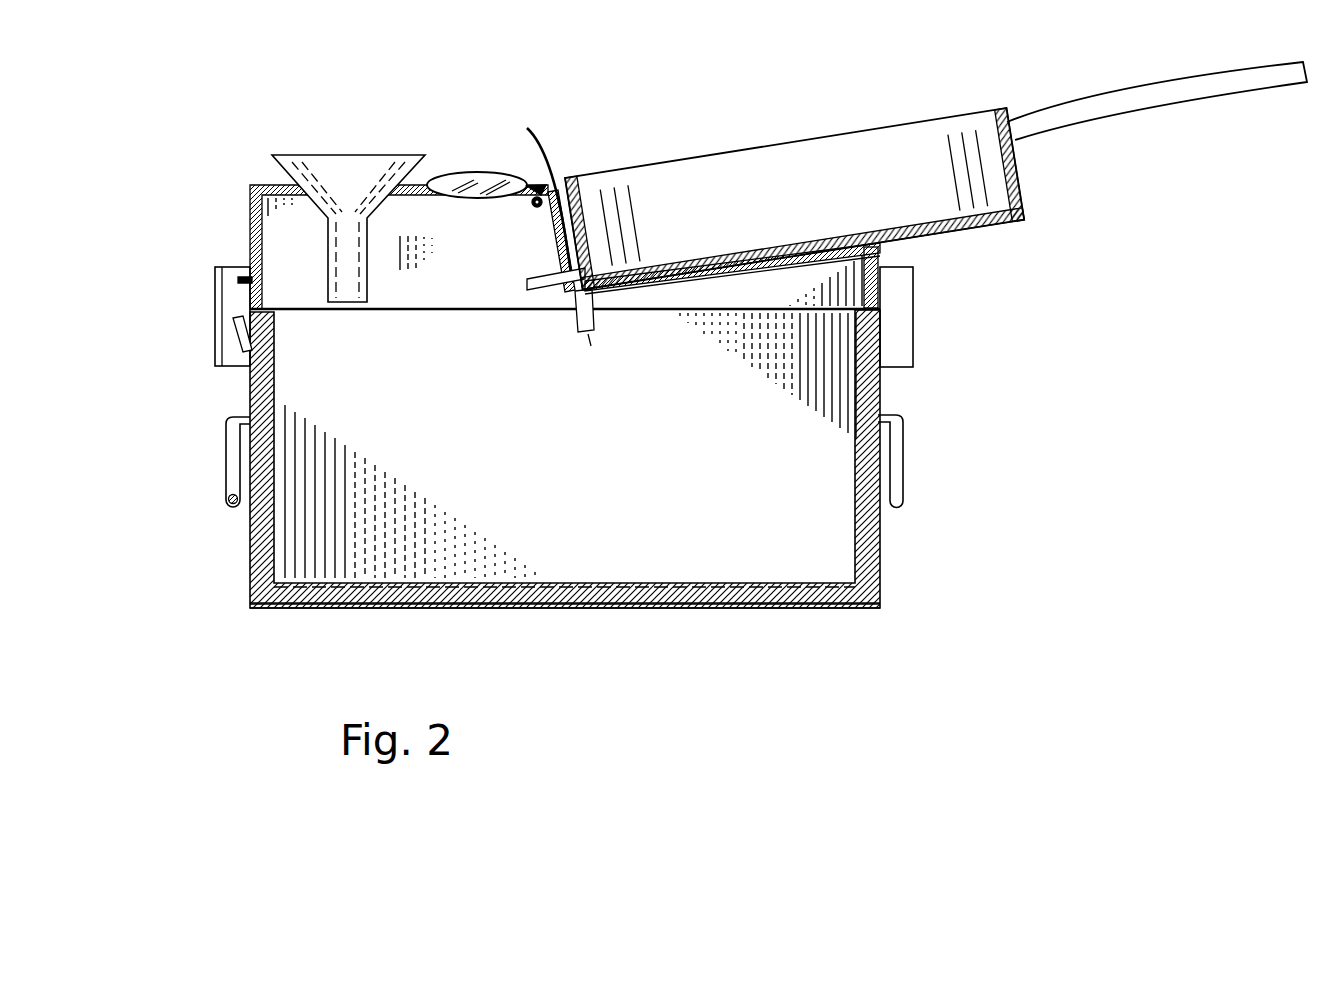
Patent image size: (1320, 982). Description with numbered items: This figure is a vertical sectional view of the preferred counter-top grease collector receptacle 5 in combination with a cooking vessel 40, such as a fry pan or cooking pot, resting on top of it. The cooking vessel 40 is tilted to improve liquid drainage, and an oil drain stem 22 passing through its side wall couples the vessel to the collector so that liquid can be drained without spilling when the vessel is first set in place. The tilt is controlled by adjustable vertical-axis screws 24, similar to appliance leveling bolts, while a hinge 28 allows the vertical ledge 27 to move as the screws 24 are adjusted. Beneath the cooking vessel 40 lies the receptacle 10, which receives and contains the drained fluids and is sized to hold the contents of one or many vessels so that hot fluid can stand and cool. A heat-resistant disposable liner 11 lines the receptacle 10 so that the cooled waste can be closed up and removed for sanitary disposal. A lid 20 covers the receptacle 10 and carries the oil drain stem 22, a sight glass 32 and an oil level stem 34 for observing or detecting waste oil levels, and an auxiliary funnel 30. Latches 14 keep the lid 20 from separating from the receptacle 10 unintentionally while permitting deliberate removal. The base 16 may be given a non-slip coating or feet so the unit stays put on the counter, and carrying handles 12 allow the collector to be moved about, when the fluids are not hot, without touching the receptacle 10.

The counter-top grease collector receptacle 5 is at (196, 120).
The receptacle 10 is at (880, 557).
The disposable liner 11 is at (855, 548).
The carrying handles 12 is at (230, 433).
The latches 14 is at (227, 337).
The base 16 is at (640, 607).
The lid 20 is at (469, 274).
The oil drain stem 22 is at (527, 128).
The screws 24 is at (884, 253).
The vertical ledge 27 is at (553, 259).
The hinge 28 is at (537, 197).
The auxiliary funnel 30 is at (350, 147).
The sight glass 32 is at (487, 180).
The oil level stem 34 is at (587, 345).
The cooking vessel 40 is at (751, 200).